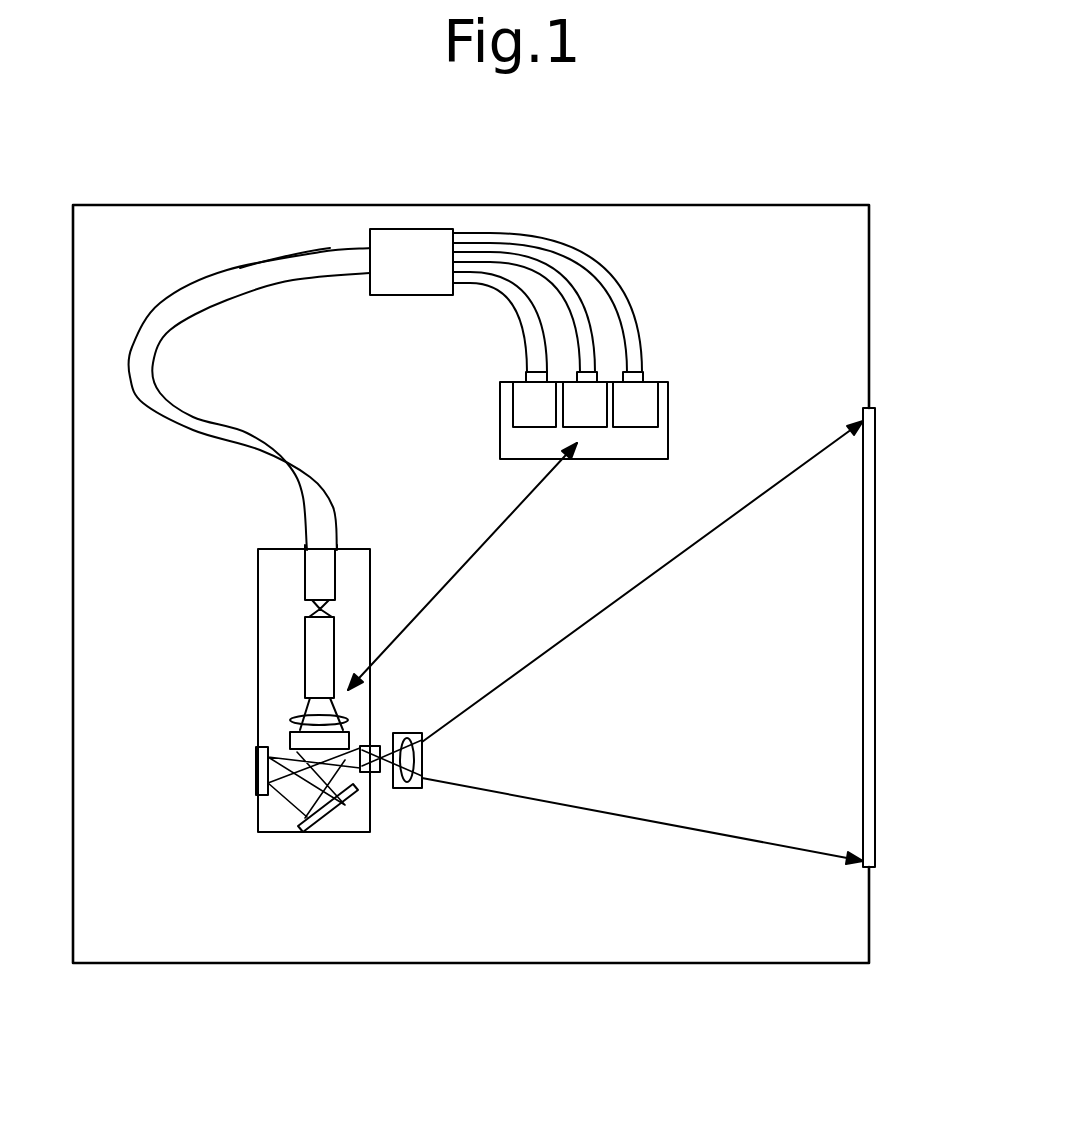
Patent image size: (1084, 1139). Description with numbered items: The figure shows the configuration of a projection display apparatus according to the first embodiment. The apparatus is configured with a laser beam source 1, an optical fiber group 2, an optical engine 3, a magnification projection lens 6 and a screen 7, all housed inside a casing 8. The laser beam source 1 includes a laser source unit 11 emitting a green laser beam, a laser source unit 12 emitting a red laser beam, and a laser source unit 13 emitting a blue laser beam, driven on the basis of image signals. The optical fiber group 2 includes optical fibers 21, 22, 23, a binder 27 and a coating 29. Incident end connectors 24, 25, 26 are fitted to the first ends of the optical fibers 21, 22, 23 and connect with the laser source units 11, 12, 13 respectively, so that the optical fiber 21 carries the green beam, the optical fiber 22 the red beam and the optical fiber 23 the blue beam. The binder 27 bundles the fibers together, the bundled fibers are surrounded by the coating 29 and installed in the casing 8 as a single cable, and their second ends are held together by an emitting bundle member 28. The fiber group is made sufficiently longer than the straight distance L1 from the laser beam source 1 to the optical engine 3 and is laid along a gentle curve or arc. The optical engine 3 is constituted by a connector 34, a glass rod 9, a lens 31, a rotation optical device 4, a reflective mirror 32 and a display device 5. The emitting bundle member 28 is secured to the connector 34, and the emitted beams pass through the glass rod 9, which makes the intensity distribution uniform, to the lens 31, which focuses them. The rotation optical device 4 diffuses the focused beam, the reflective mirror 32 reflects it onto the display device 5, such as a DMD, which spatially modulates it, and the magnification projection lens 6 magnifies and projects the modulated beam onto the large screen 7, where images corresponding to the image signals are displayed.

The laser beam source 1 is at (517, 447).
The optical fiber group 2 is at (290, 283).
The optical engine 3 is at (258, 665).
The rotation optical device 4 is at (290, 740).
The display device 5 is at (257, 772).
The magnification projection lens 6 is at (417, 790).
The screen 7 is at (870, 837).
The casing 8 is at (597, 961).
The glass rod 9 is at (323, 640).
The laser source unit 11 is at (647, 411).
The laser source unit 12 is at (580, 416).
The laser source unit 13 is at (527, 404).
The optical fiber 21 is at (627, 307).
The optical fiber 22 is at (560, 280).
The optical fiber 23 is at (528, 330).
The incident end connector 24 is at (642, 382).
The incident end connector 25 is at (592, 375).
The incident end connector 26 is at (524, 380).
The binder 27 is at (413, 240).
The emitting bundle member 28 is at (322, 570).
The coating 29 is at (320, 253).
The lens 31 is at (348, 718).
The reflective mirror 32 is at (355, 827).
The connector 34 is at (307, 545).
The distance between light source device and projector L1 is at (462, 566).